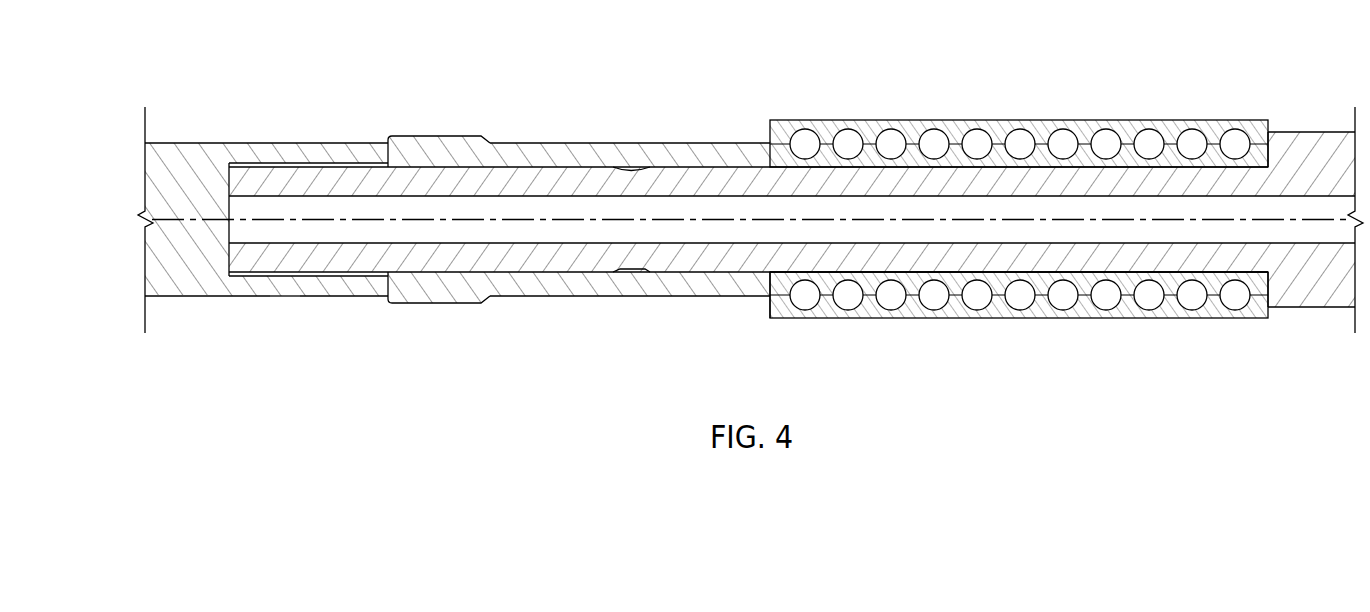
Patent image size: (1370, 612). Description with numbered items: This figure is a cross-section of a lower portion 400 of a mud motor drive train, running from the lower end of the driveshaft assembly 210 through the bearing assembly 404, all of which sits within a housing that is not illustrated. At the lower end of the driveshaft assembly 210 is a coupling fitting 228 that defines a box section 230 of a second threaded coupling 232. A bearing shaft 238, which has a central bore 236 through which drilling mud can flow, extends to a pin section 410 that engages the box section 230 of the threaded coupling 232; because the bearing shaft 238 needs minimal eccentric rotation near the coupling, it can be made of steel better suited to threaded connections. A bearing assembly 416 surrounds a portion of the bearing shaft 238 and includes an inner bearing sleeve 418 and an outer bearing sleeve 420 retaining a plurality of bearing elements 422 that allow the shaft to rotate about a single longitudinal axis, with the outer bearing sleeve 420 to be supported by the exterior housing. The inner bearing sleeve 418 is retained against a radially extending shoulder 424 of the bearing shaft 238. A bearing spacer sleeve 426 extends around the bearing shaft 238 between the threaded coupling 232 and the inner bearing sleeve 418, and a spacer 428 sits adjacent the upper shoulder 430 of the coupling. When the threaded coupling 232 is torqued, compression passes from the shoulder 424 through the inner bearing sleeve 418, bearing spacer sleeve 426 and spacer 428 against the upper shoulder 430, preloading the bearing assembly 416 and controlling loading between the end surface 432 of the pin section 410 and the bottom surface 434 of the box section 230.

The lower portion 400 is at (212, 72).
The driveshaft assembly 210 is at (171, 139).
The coupling fitting 228 is at (253, 299).
The box section 230 is at (288, 298).
The second threaded coupling 232 is at (329, 299).
The central bore 236 is at (648, 230).
The bearing shaft 238 is at (309, 177).
The bearing assembly 404 is at (1077, 112).
The pin section 410 is at (432, 262).
The bearing assembly 416 is at (971, 333).
The inner bearing sleeve 418 is at (772, 283).
The outer bearing sleeve 420 is at (771, 309).
The bearing elements 422 is at (1020, 143).
The shoulder 424 is at (1270, 131).
The bearing spacer sleeve 426 is at (588, 285).
The spacer 428 is at (394, 147).
The upper shoulder 430 is at (386, 157).
The end surface 432 is at (240, 177).
The bottom surface 434 is at (224, 265).